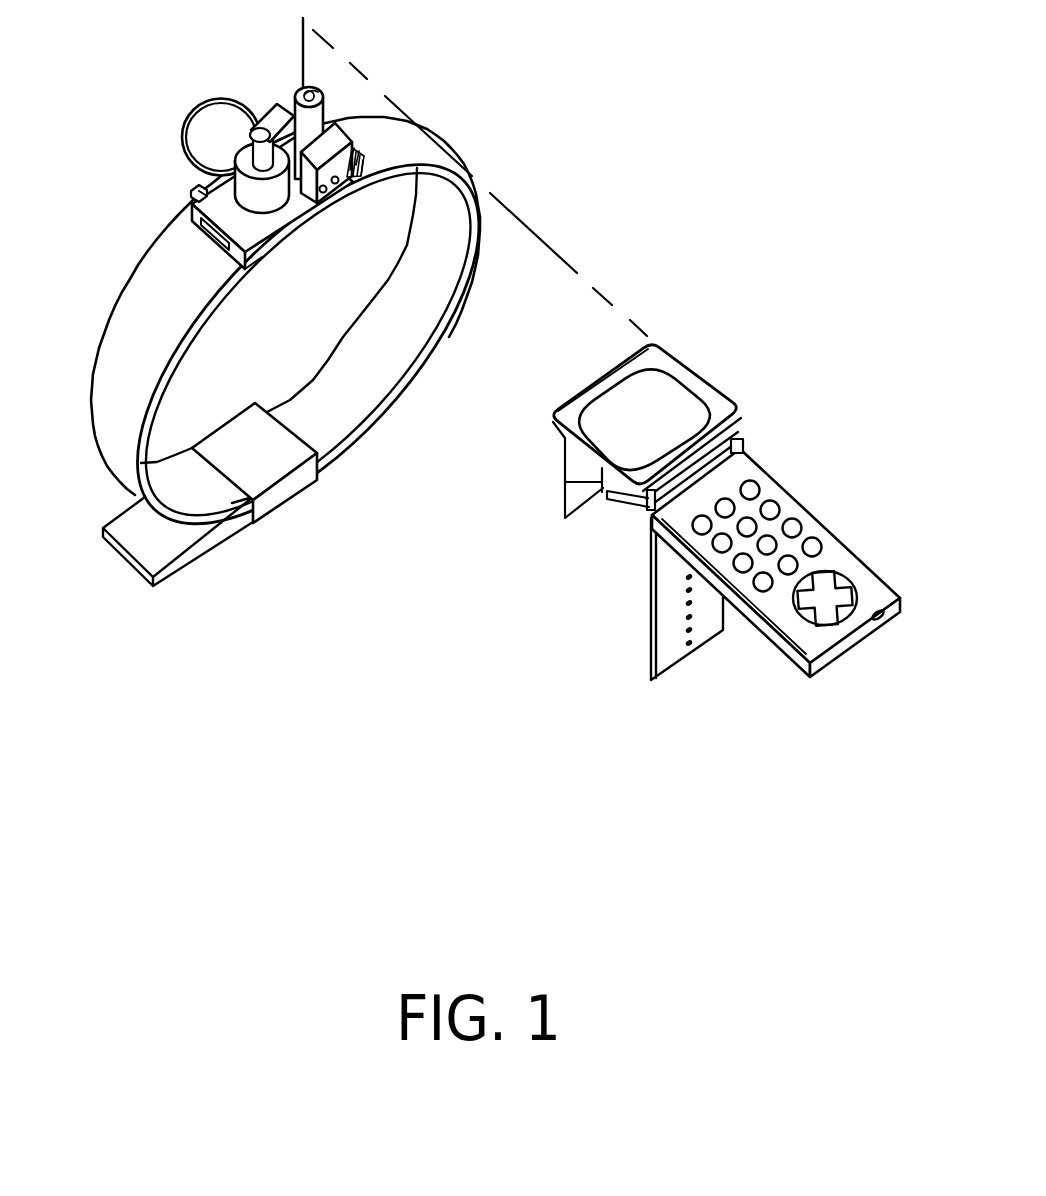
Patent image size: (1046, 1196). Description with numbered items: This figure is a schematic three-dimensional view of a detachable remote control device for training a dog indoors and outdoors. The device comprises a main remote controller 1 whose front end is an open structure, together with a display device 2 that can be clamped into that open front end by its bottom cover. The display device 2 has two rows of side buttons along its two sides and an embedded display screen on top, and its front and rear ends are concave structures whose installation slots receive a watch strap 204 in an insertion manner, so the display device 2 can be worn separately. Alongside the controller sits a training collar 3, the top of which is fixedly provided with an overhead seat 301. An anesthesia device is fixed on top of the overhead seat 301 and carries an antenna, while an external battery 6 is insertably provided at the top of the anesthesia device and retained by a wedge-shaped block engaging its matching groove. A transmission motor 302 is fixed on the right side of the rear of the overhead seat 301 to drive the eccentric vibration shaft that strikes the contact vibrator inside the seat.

The main remote controller 1 is at (812, 528).
The display device 2 is at (707, 387).
The training collar 3 is at (130, 352).
The external battery 6 is at (333, 130).
The overhead seat 301 is at (192, 218).
The transmission motor 302 is at (190, 190).
The watch strap 204 is at (662, 620).